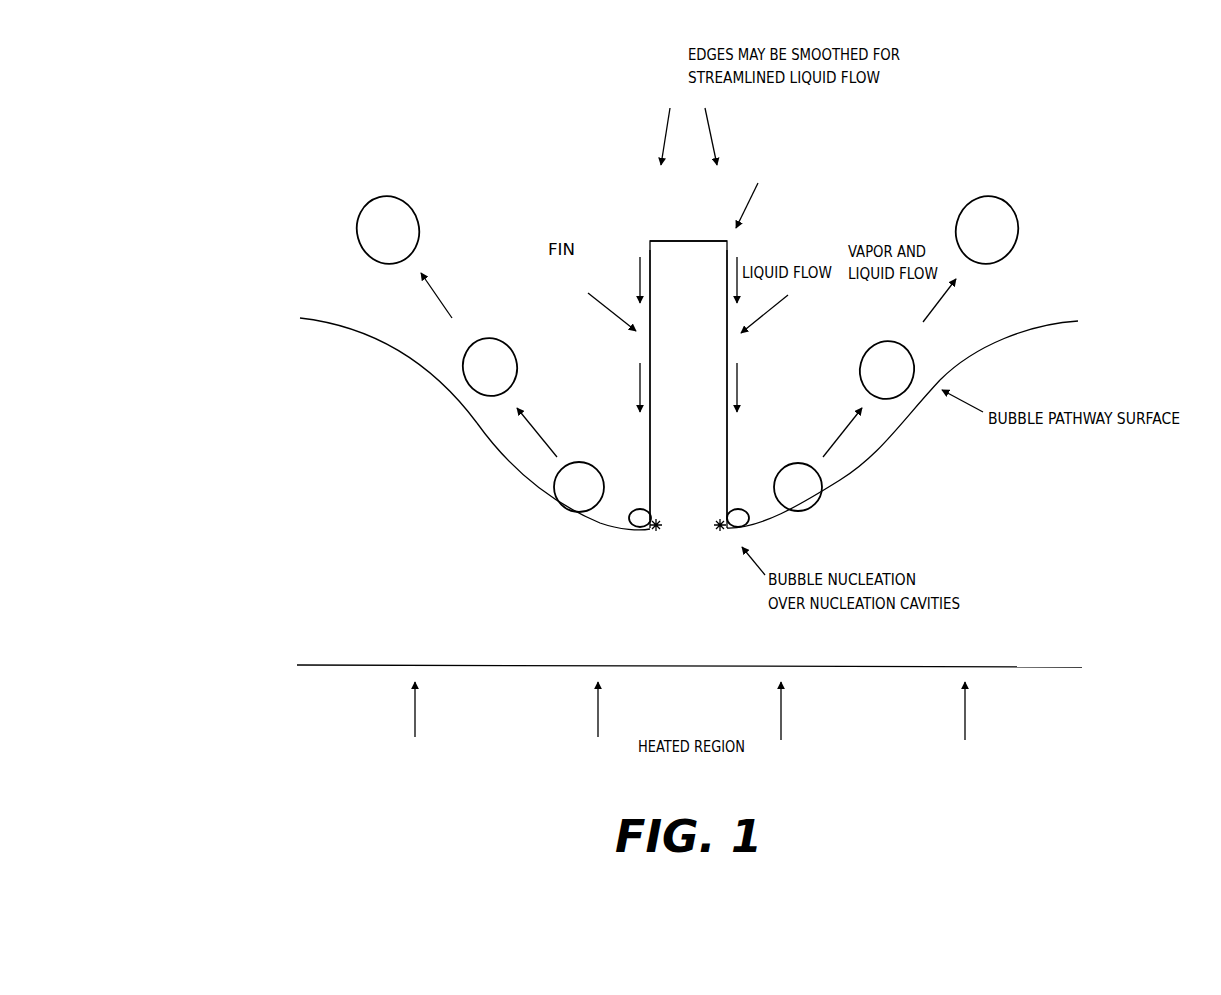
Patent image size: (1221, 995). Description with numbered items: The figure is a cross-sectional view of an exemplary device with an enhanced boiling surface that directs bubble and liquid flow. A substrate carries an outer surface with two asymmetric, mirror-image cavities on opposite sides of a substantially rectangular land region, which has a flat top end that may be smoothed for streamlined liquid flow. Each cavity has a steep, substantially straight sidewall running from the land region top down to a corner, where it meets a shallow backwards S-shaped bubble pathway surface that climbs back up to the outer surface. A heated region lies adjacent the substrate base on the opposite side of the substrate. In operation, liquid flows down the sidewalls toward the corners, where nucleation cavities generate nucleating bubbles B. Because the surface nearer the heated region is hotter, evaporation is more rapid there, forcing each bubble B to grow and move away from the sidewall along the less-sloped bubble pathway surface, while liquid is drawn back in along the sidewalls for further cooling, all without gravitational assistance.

The bubbles B is at (393, 200).